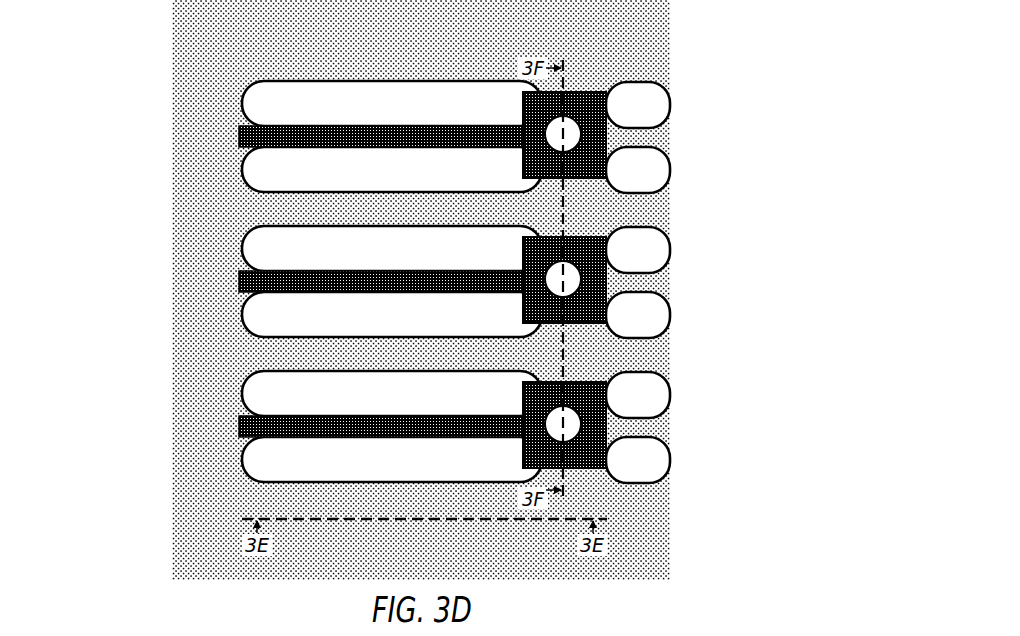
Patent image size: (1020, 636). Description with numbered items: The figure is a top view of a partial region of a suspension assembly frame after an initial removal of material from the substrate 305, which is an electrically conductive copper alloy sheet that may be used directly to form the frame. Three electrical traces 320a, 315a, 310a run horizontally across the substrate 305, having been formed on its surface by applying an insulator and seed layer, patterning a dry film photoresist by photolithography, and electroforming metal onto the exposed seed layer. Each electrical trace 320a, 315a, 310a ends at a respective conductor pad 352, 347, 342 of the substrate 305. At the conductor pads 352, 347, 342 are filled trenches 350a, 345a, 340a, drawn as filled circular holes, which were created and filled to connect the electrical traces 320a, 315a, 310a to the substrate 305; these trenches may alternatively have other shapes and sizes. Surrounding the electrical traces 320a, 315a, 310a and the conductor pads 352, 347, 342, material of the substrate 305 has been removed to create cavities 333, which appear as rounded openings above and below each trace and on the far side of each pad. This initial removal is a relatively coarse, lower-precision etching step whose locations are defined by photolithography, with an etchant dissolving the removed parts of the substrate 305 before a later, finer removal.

The substrate 305 is at (307, 17).
The cavities 333 is at (295, 100).
The electrical trace 320a is at (240, 139).
The electrical trace 315a is at (240, 284).
The electrical trace 310a is at (240, 429).
The conductor pad 352 is at (598, 126).
The conductor pad 347 is at (598, 274).
The conductor pad 342 is at (598, 419).
The filled trench 350a is at (572, 147).
The filled trench 345a is at (572, 293).
The filled trench 340a is at (572, 438).